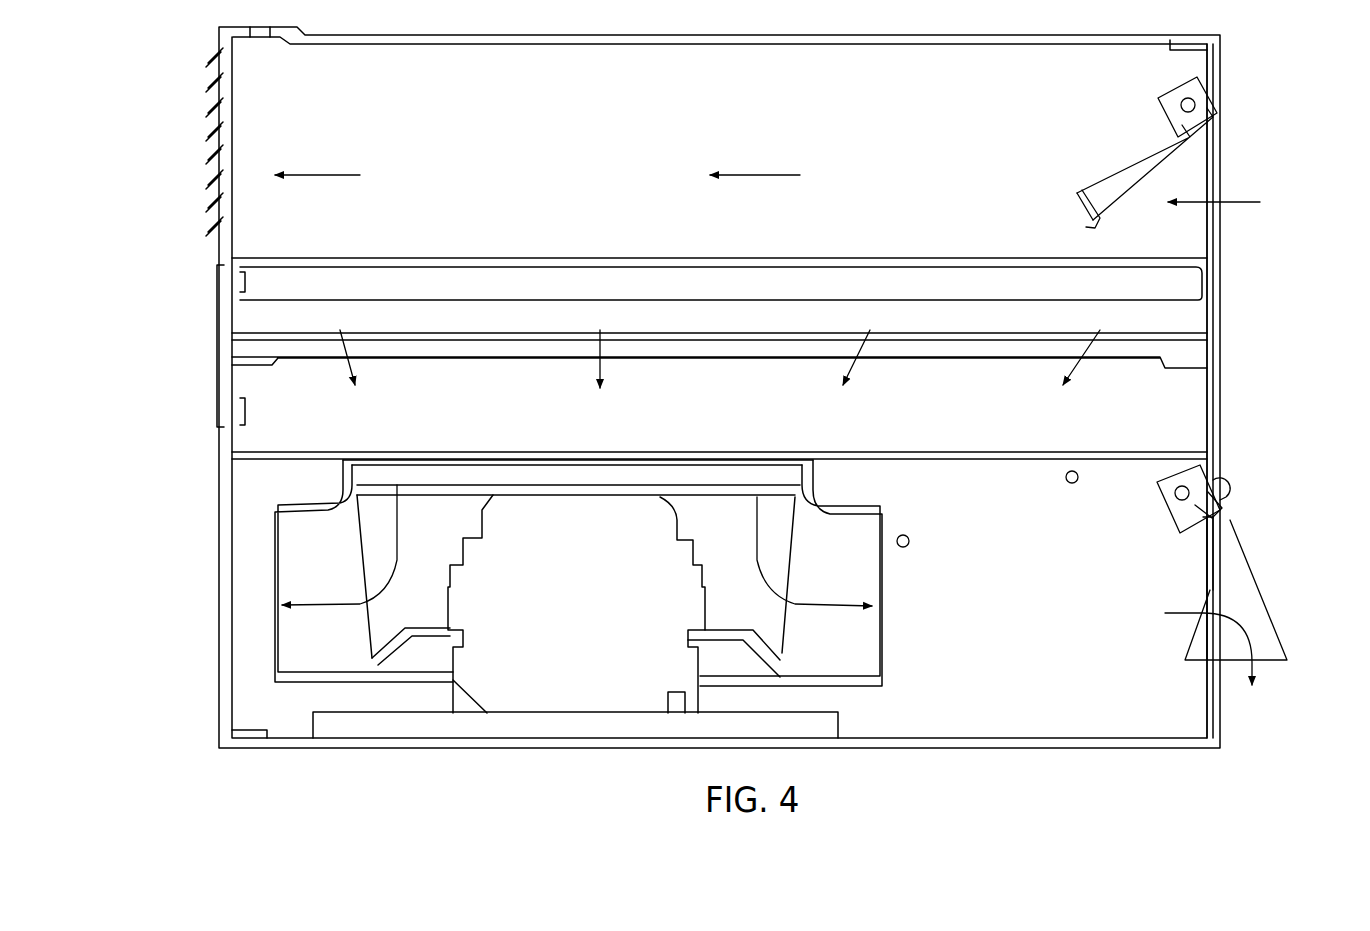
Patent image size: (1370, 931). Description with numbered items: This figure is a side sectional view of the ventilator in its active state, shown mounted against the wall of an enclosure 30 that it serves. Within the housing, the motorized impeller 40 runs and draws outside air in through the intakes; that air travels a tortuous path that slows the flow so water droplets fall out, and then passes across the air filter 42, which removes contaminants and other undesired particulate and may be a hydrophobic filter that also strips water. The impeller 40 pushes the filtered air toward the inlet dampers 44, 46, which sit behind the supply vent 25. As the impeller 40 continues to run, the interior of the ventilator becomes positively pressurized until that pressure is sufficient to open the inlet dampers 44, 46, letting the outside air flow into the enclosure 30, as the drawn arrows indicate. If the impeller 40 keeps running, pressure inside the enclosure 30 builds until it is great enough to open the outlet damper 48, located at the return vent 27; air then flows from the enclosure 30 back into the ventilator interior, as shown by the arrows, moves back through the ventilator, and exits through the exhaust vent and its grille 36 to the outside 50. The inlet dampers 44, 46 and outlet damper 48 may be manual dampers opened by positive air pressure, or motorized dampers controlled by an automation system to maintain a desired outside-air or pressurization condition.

The grille 36 is at (210, 152).
The outside 50 is at (166, 285).
The air filter 42 is at (248, 348).
The enclosure 30 is at (1290, 294).
The outlet damper 48 is at (1218, 178).
The return vent 27 is at (1218, 220).
The motorized impeller 40 is at (590, 680).
The supply vent 25 is at (1230, 520).
The inlet damper 44 is at (1237, 567).
The inlet damper 46 is at (1235, 617).